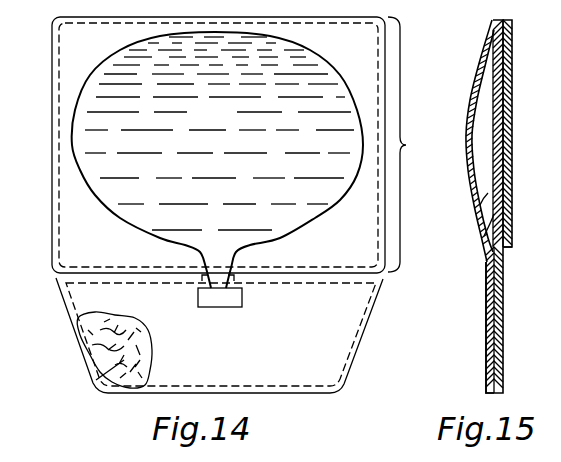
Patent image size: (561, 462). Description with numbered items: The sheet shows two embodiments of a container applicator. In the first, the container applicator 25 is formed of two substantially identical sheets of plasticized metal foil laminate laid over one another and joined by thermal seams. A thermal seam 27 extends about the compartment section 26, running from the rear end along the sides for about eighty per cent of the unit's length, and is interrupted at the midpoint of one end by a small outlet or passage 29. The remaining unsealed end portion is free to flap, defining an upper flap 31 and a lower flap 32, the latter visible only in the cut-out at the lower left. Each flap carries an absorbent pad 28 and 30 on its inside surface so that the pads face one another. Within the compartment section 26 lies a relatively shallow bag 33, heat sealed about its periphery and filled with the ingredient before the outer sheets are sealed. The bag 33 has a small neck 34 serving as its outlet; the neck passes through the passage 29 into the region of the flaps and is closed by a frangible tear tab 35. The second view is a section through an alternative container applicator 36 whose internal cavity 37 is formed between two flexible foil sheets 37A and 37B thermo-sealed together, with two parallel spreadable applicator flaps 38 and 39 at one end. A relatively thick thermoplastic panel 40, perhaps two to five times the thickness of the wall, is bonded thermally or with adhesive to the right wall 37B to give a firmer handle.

In FIG. 14, the container applicator 25 is at (41, 167).
In FIG. 14, the compartment section 26 is at (414, 144).
In FIG. 14, the thermal seam 27 is at (62, 56).
In FIG. 14, the absorbent pad 28 is at (152, 352).
In FIG. 14, the outlet or passage 29 is at (203, 279).
In FIG. 14, the absorbent pad 30 is at (96, 380).
In FIG. 14, the upper flap 31 is at (60, 298).
In FIG. 14, the lower flap 32 is at (86, 357).
In FIG. 14, the bag 33 is at (230, 130).
In FIG. 14, the neck 34 is at (218, 268).
In FIG. 14, the tear tab 35 is at (219, 307).
In FIG. 15, the container applicator 36 is at (470, 70).
In FIG. 15, the internal cavity 37 is at (476, 114).
In FIG. 15, the sheet of flexible foil material 37A is at (485, 193).
In FIG. 15, the right wall 37B is at (490, 214).
In FIG. 15, the applicator flap 38 is at (487, 332).
In FIG. 15, the applicator flap 39 is at (503, 331).
In FIG. 15, the panel 40 is at (511, 85).